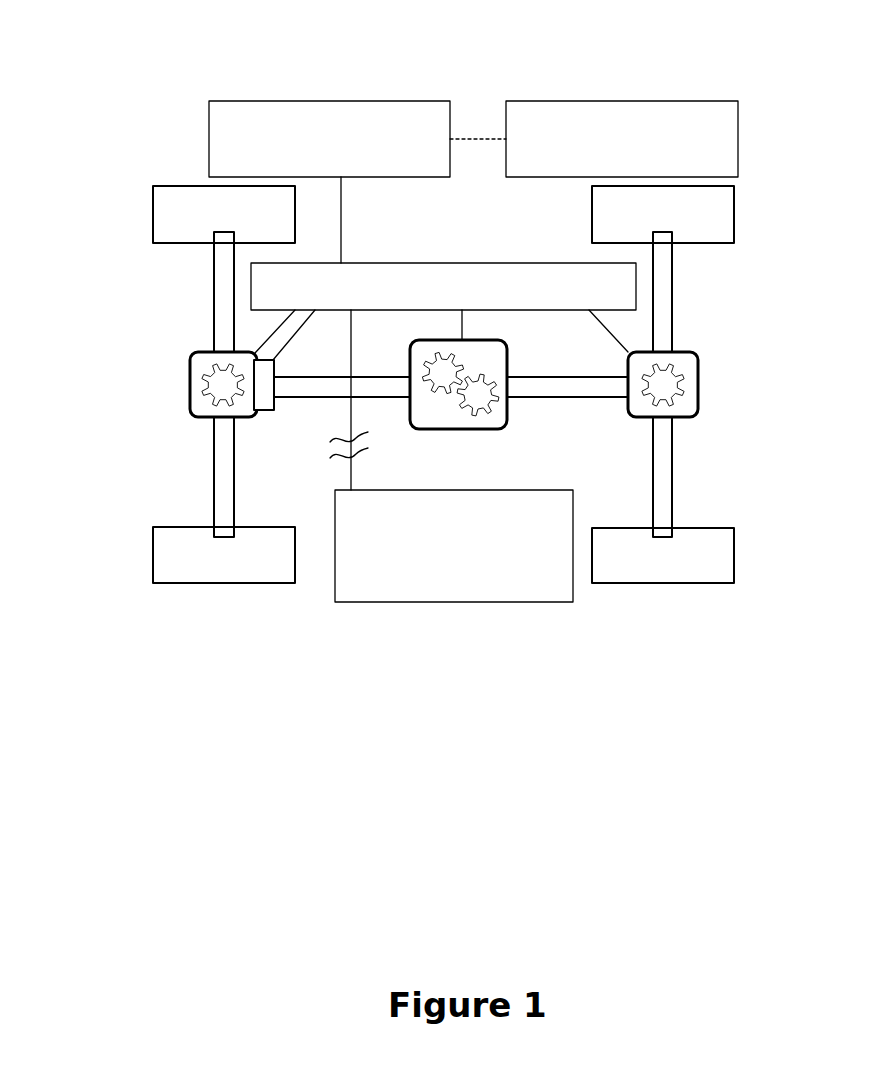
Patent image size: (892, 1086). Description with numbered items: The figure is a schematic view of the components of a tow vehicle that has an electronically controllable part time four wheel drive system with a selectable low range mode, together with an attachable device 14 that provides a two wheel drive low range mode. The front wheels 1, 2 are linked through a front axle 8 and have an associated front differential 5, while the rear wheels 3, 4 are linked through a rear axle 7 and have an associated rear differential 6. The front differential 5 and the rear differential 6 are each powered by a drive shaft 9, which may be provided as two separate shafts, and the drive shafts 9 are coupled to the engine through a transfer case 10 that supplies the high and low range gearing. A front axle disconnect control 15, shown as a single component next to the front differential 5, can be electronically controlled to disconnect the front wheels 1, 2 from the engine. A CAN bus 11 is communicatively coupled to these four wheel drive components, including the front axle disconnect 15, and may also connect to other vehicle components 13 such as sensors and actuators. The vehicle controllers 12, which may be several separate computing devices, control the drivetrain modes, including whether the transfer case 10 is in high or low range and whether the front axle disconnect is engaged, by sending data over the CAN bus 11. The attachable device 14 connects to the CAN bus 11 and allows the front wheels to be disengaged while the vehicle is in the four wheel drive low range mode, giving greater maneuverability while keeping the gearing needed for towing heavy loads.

The front wheel 1 is at (153, 207).
The front wheel 2 is at (153, 552).
The rear wheel 3 is at (733, 552).
The rear wheel 4 is at (733, 215).
The front differential 5 is at (190, 385).
The rear differential 6 is at (698, 383).
The rear axle 7 is at (675, 473).
The front axle 8 is at (214, 300).
The drive shaft 9 is at (565, 397).
The transfer case 10 is at (467, 430).
The CAN bus 11 is at (636, 293).
The vehicle controllers 12 is at (328, 101).
The other vehicle components 13 is at (590, 101).
The attachable device 14 is at (447, 602).
The front axle disconnect control 15 is at (263, 413).